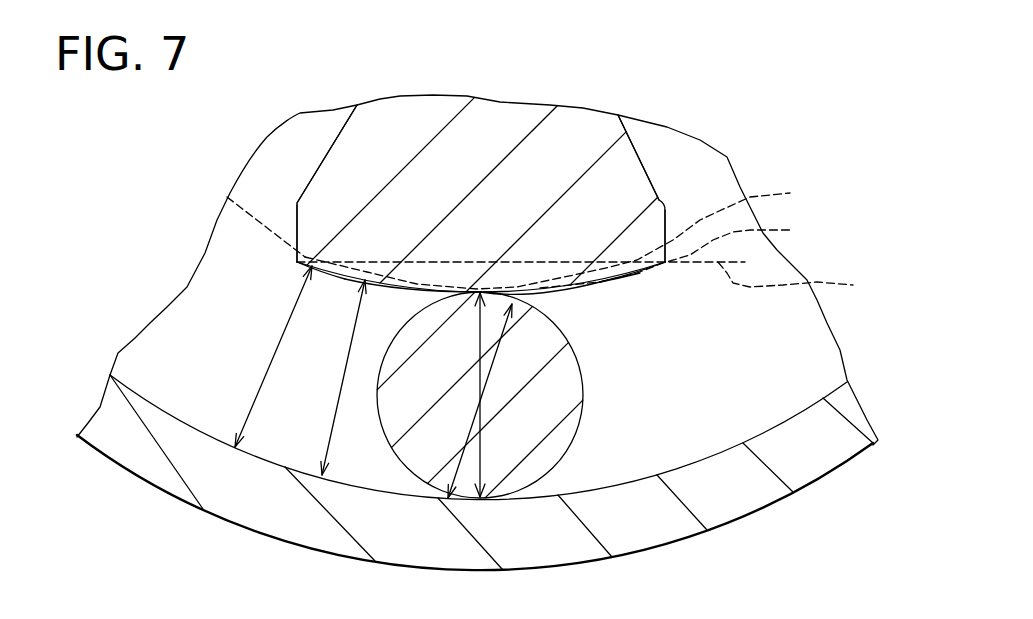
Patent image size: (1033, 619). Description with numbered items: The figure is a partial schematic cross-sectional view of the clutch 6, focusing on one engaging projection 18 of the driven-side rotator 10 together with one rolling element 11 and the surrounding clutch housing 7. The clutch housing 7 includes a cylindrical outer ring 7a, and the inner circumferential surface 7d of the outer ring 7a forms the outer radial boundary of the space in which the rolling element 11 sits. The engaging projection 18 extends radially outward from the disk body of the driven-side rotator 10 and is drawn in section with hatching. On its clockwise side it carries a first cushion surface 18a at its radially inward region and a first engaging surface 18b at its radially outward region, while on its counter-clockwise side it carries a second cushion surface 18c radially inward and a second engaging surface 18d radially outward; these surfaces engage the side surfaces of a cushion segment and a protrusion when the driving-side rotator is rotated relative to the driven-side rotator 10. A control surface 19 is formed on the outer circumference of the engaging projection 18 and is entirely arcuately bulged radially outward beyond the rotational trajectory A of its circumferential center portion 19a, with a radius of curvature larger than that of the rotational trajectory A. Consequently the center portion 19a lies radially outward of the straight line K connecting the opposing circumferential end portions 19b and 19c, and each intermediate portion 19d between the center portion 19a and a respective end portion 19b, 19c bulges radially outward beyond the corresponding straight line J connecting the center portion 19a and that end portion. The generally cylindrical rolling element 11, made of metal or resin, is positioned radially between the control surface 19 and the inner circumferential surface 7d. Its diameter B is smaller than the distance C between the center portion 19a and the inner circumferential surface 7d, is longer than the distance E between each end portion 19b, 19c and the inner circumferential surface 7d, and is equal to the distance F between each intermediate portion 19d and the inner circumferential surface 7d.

The clutch 6 is at (815, 257).
The clutch housing 7 is at (763, 497).
The outer ring 7a is at (650, 545).
The inner circumferential surface 7d is at (628, 479).
The driven-side rotator 10 is at (494, 149).
The rolling element 11 is at (581, 390).
The engaging projection 18 is at (343, 167).
The first cushion surface 18a is at (297, 235).
The first engaging surface 18b is at (335, 138).
The second cushion surface 18c is at (637, 155).
The second engaging surface 18d is at (666, 228).
The control surface 19 is at (570, 286).
The center portion 19a is at (515, 289).
The end portion 19b is at (657, 268).
The end portion 19c is at (305, 263).
The intermediate portion 19d is at (362, 281).
The rotational trajectory A is at (520, 233).
The straight line J is at (672, 253).
The straight line K is at (586, 282).
The diameter B is at (491, 368).
The distance C is at (480, 368).
The distance E is at (268, 370).
The distance F is at (340, 395).